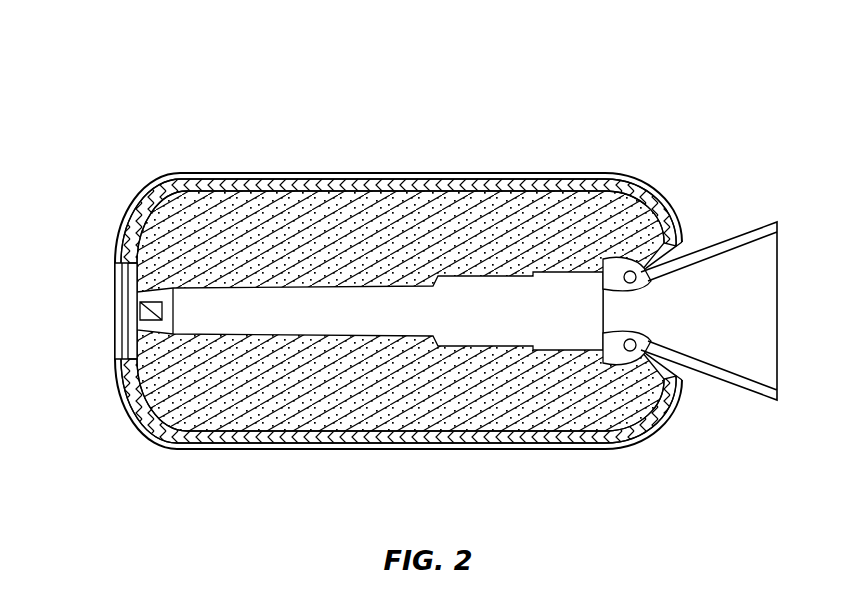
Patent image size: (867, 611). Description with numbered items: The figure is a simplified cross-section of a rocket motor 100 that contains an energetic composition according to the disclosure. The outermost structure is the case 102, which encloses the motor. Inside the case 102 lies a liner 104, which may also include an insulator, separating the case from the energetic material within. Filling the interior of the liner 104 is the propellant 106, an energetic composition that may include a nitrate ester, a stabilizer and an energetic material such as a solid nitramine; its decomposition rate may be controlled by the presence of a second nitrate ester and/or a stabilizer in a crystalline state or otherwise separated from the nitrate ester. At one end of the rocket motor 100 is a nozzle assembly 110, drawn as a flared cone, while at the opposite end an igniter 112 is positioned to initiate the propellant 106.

The rocket motor 100 is at (400, 266).
The case 102 is at (183, 173).
The liner 104 is at (283, 180).
The propellant 106 is at (437, 433).
The nozzle assembly 110 is at (730, 237).
The igniter 112 is at (147, 303).